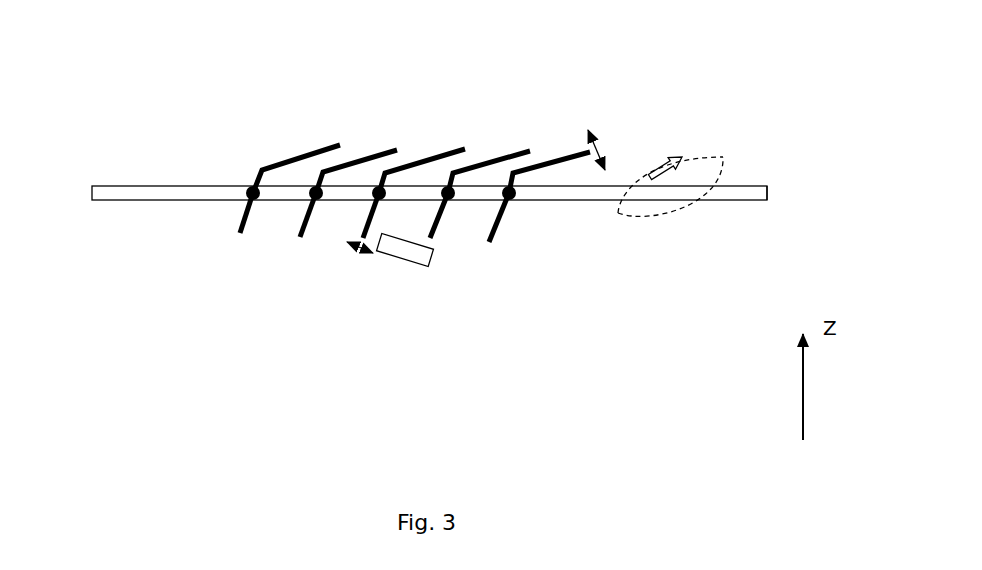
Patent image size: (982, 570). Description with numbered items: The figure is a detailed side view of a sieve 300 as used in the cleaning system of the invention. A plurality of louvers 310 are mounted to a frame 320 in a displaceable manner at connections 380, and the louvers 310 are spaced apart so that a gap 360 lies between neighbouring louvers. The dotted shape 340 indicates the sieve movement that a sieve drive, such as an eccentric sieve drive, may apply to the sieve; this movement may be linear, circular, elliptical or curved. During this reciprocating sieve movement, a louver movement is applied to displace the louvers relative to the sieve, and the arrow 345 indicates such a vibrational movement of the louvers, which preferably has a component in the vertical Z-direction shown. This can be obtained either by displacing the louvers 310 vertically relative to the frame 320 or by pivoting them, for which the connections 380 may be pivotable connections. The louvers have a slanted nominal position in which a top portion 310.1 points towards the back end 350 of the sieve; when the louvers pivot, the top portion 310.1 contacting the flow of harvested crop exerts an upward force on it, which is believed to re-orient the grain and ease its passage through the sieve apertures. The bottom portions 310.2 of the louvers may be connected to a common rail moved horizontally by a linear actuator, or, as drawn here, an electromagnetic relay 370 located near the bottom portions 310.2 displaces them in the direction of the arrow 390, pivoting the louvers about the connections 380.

The sieve 300 is at (143, 73).
The louvers 310 is at (405, 195).
The top portion of the louvers 310.1 is at (507, 155).
The bottom portions of the louvers 310.2 is at (440, 222).
The frame 320 is at (118, 201).
The dotted shape 340 is at (640, 217).
The arrow 345 is at (600, 150).
The back end of the sieve 350 is at (767, 191).
The gap 360 is at (395, 158).
The relays 370 is at (383, 252).
The connections 380 is at (253, 186).
The arrow 390 is at (363, 252).